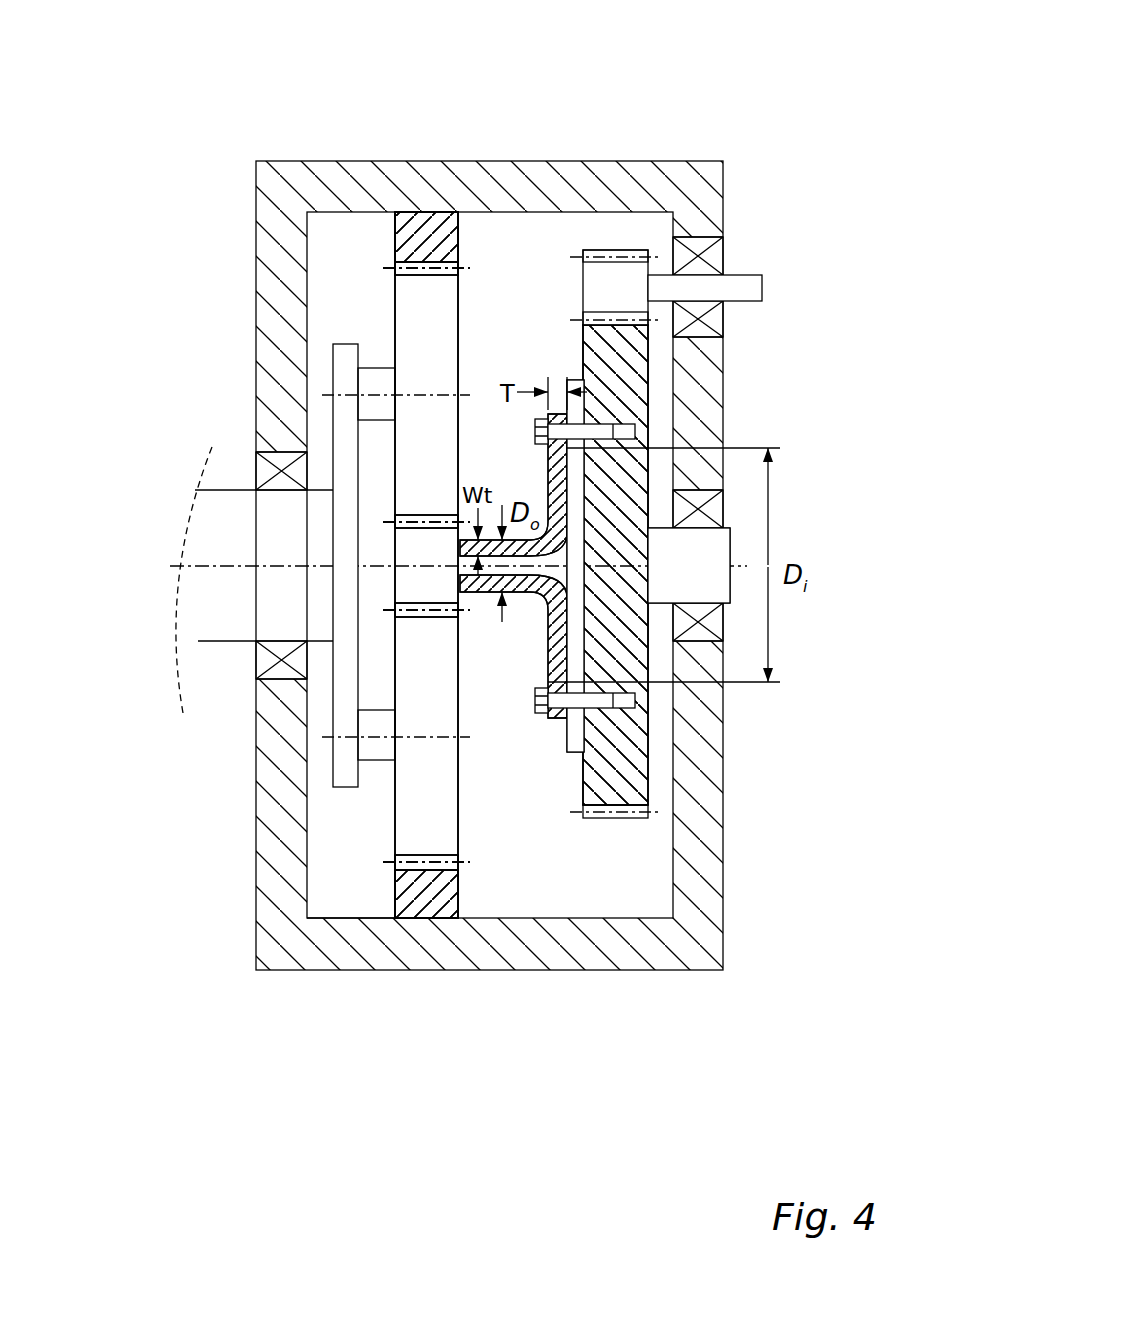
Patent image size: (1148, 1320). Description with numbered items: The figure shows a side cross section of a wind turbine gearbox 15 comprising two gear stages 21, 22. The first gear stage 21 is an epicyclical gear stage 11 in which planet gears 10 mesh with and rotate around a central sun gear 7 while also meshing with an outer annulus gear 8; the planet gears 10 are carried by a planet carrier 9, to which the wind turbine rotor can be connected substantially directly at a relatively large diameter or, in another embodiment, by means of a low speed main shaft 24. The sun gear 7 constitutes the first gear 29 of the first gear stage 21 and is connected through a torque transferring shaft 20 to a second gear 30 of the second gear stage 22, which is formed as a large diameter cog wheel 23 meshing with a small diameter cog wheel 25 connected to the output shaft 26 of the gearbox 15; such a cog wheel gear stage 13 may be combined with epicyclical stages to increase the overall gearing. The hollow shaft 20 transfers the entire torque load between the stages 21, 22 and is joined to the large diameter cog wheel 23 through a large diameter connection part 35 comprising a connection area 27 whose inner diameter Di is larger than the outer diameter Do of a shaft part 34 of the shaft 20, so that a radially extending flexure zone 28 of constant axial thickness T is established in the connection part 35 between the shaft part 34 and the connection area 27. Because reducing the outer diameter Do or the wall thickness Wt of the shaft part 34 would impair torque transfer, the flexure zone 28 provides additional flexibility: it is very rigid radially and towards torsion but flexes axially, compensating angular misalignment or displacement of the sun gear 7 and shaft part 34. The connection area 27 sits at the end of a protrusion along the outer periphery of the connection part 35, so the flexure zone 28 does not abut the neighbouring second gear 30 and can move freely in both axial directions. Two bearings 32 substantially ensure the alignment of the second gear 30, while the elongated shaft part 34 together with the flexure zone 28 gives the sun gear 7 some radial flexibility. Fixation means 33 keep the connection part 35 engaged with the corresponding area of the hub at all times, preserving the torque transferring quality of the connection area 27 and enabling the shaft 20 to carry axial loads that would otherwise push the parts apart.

The sun gear 7 is at (425, 545).
The annulus gear 8 is at (430, 905).
The planet carrier 9 is at (340, 365).
The planet gears 10 is at (413, 310).
The epicyclical gear stage 11 is at (345, 878).
The cog wheel gear stage 13 is at (658, 339).
The wind turbine gearbox 15 is at (692, 95).
The torque transferring shaft 20 is at (478, 595).
The first gear stage 21 is at (345, 240).
The second gear stage 22 is at (652, 228).
The large diameter cog wheel 23 is at (633, 725).
The low speed main shaft 24 is at (238, 598).
The small diameter cog wheel 25 is at (618, 286).
The output shaft 26 is at (740, 283).
The connection area 27 is at (625, 808).
The flexure zone 28 is at (560, 635).
The first gear 29 is at (425, 597).
The second gear 30 is at (633, 767).
The bearings 32 is at (715, 623).
The fixation means 33 is at (600, 428).
The shaft part 34 is at (523, 582).
The connection part 35 is at (560, 635).